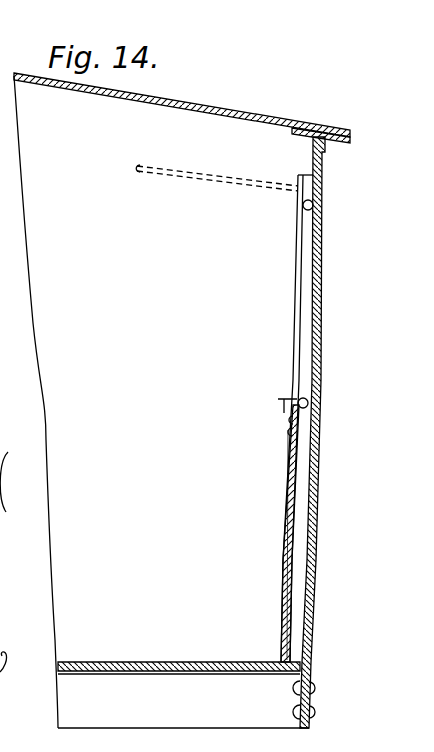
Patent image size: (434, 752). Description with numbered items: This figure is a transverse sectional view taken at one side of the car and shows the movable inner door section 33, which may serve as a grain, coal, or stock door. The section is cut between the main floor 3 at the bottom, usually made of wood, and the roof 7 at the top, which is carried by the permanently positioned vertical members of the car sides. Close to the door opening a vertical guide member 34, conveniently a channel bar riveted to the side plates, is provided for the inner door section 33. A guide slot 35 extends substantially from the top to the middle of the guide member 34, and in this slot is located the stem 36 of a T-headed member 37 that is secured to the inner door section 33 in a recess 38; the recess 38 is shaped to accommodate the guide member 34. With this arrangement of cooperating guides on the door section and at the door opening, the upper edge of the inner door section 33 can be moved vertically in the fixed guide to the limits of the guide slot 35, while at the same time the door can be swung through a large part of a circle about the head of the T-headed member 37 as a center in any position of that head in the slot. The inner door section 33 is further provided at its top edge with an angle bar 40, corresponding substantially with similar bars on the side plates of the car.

The main floor 3 is at (113, 662).
The roof 7 is at (101, 99).
The inner door section 33 is at (170, 177).
The vertical guide member 34 is at (305, 182).
The guide slot 35 is at (300, 230).
The stem 36 is at (288, 428).
The T-headed member 37 is at (309, 403).
The recess 38 is at (292, 512).
The angle bar 40 is at (283, 399).